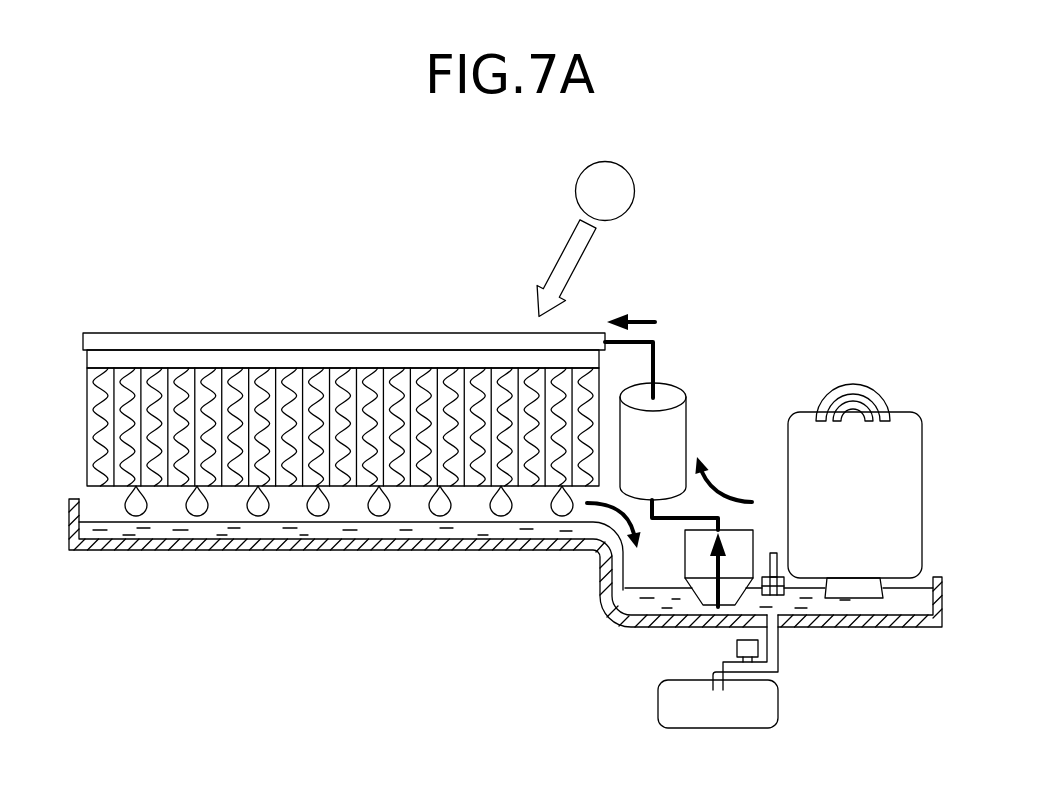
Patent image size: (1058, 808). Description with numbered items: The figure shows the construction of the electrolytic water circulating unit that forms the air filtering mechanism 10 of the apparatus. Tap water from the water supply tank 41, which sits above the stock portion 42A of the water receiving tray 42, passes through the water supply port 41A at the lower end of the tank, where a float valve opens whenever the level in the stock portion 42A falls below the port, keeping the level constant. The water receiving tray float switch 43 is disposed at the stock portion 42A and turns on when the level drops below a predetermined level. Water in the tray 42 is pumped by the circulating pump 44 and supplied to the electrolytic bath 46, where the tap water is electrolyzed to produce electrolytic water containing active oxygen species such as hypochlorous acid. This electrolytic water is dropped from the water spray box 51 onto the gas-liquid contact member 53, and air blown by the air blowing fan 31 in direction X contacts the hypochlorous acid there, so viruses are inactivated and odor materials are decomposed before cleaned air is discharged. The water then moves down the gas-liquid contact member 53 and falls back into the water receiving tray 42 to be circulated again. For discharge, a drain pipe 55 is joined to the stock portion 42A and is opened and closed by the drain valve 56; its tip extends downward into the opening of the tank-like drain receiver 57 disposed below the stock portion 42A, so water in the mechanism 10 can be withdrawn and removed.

The air filtering mechanism 10 is at (758, 308).
The air blowing fan 31 is at (610, 162).
The spray direction X is at (572, 248).
The water spray box 51 is at (418, 343).
The gas-liquid contact member 53 is at (291, 370).
The water supply tank 41 is at (903, 423).
The water supply port 41A is at (860, 590).
The water receiving tray 42 is at (345, 550).
The stock portion 42A is at (835, 628).
The water receiving tray float switch 43 is at (773, 553).
The circulating pump 44 is at (693, 548).
The electrolytic bath 46 is at (678, 435).
The drain pipe 55 is at (780, 647).
The drain valve 56 is at (735, 645).
The drain receiver 57 is at (720, 730).